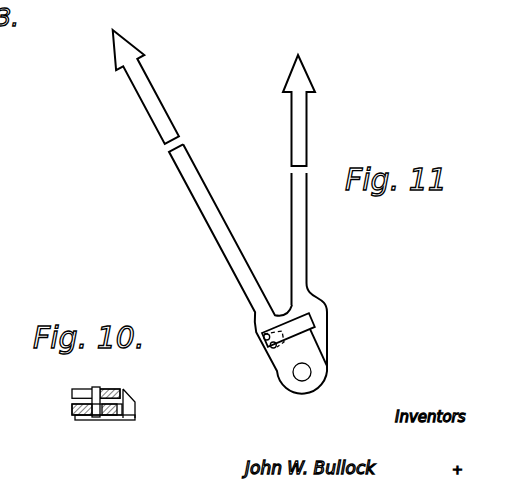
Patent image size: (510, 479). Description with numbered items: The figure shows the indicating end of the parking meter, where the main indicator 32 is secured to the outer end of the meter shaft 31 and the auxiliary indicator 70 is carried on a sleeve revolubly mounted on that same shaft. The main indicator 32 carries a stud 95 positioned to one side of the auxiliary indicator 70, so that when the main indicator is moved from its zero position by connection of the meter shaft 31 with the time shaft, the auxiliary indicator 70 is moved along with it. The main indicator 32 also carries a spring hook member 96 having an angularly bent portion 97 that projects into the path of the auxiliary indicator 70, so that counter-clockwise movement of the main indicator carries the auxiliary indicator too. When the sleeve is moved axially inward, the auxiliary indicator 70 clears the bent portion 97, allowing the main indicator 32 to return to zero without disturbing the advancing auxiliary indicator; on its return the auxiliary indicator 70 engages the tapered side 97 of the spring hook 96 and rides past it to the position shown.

In FIG. 11, the meter shaft 31 is at (306, 372).
In FIG. 11, the main indicator 32 is at (162, 110).
In FIG. 10, the main indicator 32 is at (72, 410).
In FIG. 11, the auxiliary indicator 70 is at (297, 144).
In FIG. 10, the auxiliary indicator 70 is at (72, 392).
In FIG. 11, the stud 95 is at (262, 333).
In FIG. 10, the stud 95 is at (98, 388).
In FIG. 11, the spring hook member 96 is at (314, 326).
In FIG. 10, the spring hook member 96 is at (113, 420).
In FIG. 10, the angularly bent portion 97 is at (135, 408).